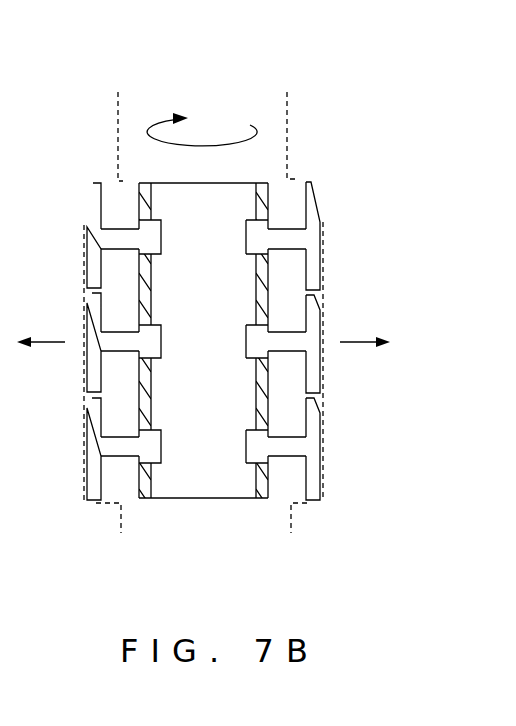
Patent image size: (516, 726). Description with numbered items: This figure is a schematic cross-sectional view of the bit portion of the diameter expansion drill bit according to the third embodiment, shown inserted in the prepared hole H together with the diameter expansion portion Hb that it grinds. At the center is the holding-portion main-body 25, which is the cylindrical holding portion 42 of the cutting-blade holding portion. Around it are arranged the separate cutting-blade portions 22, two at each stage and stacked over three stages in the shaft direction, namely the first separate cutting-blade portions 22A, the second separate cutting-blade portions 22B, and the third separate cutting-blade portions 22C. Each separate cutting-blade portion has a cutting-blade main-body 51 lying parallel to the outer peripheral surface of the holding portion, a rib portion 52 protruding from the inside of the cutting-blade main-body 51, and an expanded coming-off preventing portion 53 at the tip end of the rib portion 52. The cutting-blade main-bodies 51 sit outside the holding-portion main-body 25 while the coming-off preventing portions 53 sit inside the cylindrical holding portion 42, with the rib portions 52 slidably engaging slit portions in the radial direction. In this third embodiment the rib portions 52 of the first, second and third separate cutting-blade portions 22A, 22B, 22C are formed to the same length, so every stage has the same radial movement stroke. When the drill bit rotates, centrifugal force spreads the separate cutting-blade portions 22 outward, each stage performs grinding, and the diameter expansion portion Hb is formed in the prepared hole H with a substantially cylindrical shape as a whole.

The prepared hole H is at (118, 131).
The diameter expansion portion Hb is at (93, 504).
The separate cutting-blade portions 22 is at (247, 330).
The first separate cutting-blade portions 22A is at (344, 184).
The second separate cutting-blade portions 22B is at (344, 294).
The third separate cutting-blade portions 22C is at (344, 406).
The holding-portion main-body 25 is at (261, 492).
The cylindrical holding portion 42 is at (213, 378).
The cutting-blade main-bodies 51 is at (92, 226).
The rib portions 52 is at (133, 238).
The coming-off preventing portions 53 is at (157, 238).